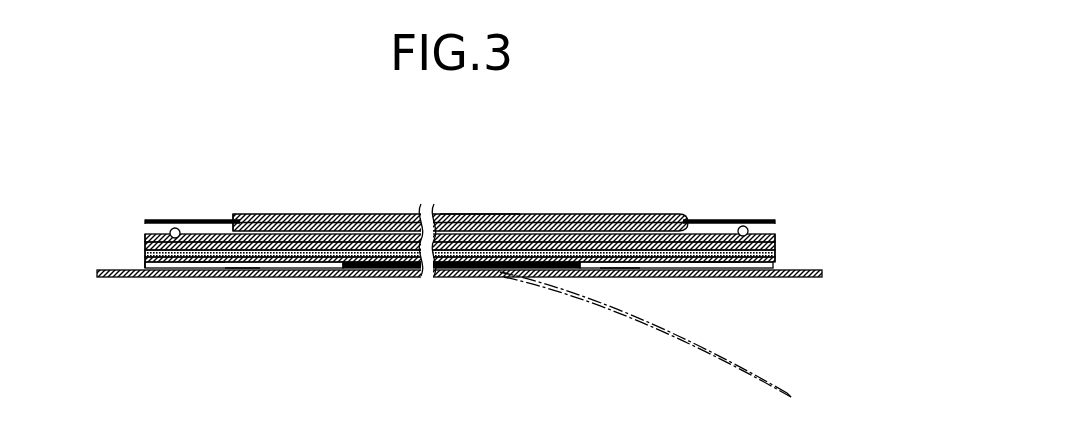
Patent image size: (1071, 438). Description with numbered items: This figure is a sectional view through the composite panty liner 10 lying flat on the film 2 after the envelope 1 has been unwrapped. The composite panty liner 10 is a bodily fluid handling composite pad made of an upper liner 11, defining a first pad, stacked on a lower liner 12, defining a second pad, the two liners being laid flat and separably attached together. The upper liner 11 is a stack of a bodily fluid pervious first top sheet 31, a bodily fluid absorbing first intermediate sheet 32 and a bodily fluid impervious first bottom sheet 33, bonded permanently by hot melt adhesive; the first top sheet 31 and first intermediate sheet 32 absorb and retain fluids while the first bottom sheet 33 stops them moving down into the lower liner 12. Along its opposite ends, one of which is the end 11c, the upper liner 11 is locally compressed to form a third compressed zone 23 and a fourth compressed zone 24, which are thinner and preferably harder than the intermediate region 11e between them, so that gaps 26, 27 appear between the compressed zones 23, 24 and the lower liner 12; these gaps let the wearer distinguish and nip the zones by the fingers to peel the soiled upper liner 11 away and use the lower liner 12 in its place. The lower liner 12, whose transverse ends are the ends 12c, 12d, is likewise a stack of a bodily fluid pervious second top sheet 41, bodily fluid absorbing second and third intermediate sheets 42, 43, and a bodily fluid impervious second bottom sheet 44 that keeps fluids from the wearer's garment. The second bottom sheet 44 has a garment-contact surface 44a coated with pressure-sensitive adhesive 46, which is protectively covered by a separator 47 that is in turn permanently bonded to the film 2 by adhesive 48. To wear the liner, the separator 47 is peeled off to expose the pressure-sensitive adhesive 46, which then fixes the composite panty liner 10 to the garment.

The envelope 1 is at (462, 218).
The film 2 is at (806, 270).
The composite panty liner 10 is at (434, 232).
The upper liner 11 is at (440, 185).
The end of upper liner 11c is at (253, 213).
The intermediate region 11e is at (475, 213).
The lower liner 12 is at (434, 252).
The end of lower liner 12c is at (171, 238).
The end of lower liner 12d is at (745, 236).
The third compressed zone 23 is at (170, 219).
The fourth compressed zone 24 is at (755, 218).
The gap 26 is at (148, 228).
The gap 27 is at (778, 224).
The first top sheet 31 is at (516, 234).
The first intermediate sheet 32 is at (553, 242).
The first bottom sheet 33 is at (597, 250).
The second top sheet 41 is at (708, 262).
The second intermediate sheet 42 is at (681, 260).
The third intermediate sheet 43 is at (621, 278).
The second bottom sheet 44 is at (433, 289).
The garment-contact surface 44a is at (149, 268).
The pressure-sensitive adhesive 46 is at (205, 266).
The separator 47 is at (233, 266).
The adhesive 48 is at (380, 271).